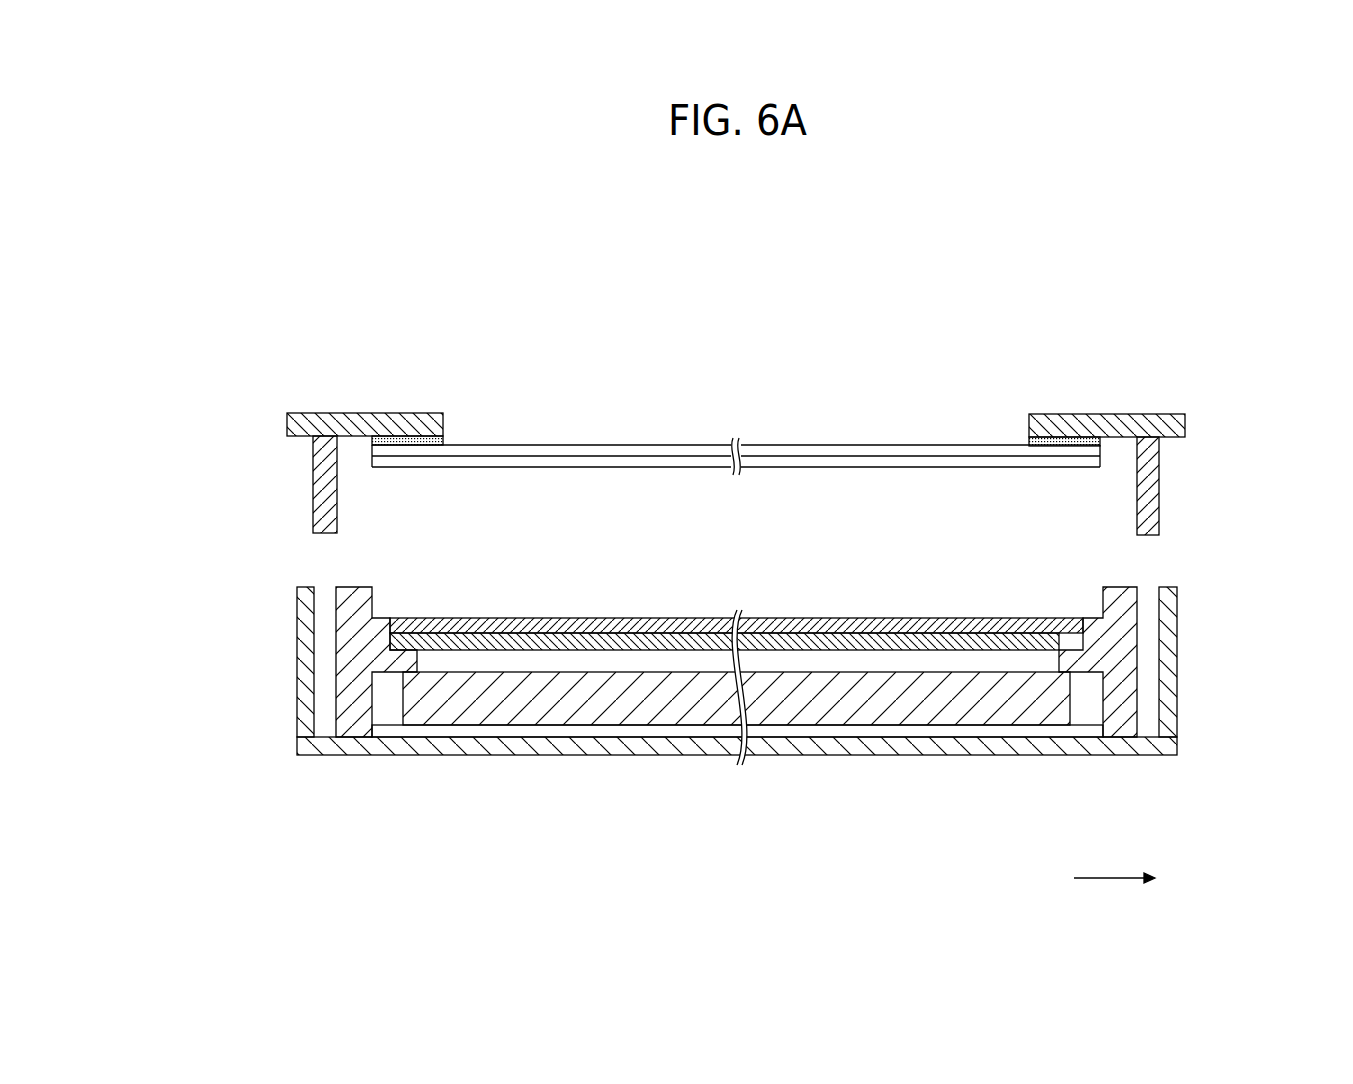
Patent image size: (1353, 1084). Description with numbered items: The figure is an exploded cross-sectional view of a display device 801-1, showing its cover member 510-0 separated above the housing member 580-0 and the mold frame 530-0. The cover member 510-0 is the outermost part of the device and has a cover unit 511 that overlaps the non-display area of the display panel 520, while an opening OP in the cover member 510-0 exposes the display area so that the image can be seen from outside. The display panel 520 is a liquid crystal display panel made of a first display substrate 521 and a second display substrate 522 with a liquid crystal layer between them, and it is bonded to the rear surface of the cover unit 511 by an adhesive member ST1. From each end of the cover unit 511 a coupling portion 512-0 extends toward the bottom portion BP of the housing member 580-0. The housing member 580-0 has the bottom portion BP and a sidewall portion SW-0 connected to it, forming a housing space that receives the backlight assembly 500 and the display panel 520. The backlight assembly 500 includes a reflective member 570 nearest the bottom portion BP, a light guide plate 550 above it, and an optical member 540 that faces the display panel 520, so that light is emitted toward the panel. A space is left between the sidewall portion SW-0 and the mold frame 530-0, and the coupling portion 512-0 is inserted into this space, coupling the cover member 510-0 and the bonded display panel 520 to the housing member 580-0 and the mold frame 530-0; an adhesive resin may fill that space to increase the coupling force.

The display device 801-1 is at (1098, 292).
The cover member 510-0 is at (195, 413).
The cover unit 511 is at (300, 425).
The coupling portion 512-0 is at (322, 467).
The adhesive member ST1 is at (407, 435).
The display panel 520 is at (548, 355).
The first display substrate 521 is at (466, 460).
The second display substrate 522 is at (528, 447).
The opening OP is at (804, 428).
The housing member 580-0 is at (195, 702).
The sidewall portion SW-0 is at (306, 712).
The bottom portion BP is at (340, 750).
The mold frame 530-0 is at (350, 660).
The backlight assembly 500 is at (645, 835).
The optical member 540 is at (628, 645).
The light guide plate 550 is at (567, 705).
The reflective member 570 is at (510, 732).